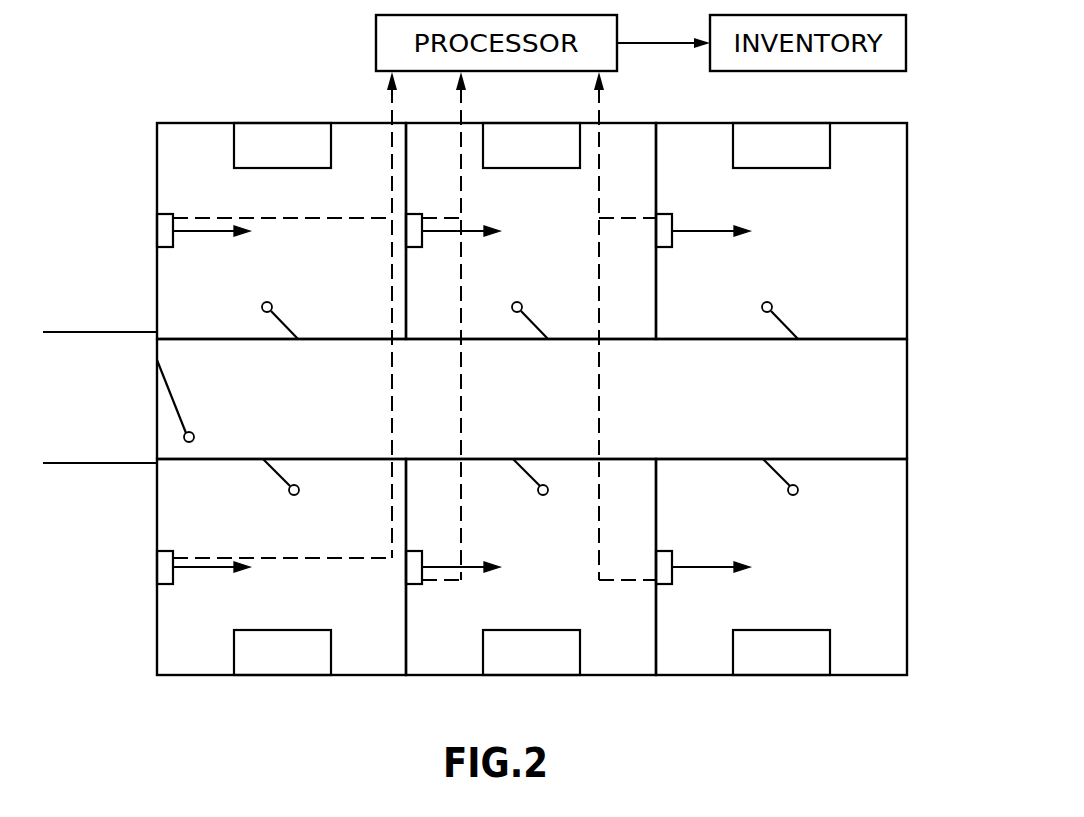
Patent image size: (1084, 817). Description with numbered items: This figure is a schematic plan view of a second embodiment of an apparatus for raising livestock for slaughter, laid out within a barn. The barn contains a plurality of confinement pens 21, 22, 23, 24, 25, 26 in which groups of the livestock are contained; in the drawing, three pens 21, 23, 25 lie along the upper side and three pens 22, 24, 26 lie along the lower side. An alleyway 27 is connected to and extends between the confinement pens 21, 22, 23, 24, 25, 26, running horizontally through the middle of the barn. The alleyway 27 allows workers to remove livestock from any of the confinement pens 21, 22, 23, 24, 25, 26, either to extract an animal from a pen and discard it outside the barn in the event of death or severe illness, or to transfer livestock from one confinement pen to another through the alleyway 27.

The confinement pen 21 is at (180, 275).
The confinement pen 22 is at (177, 615).
The confinement pen 23 is at (485, 328).
The confinement pen 24 is at (577, 472).
The confinement pen 25 is at (712, 327).
The confinement pen 26 is at (702, 470).
The alleyway 27 is at (882, 398).